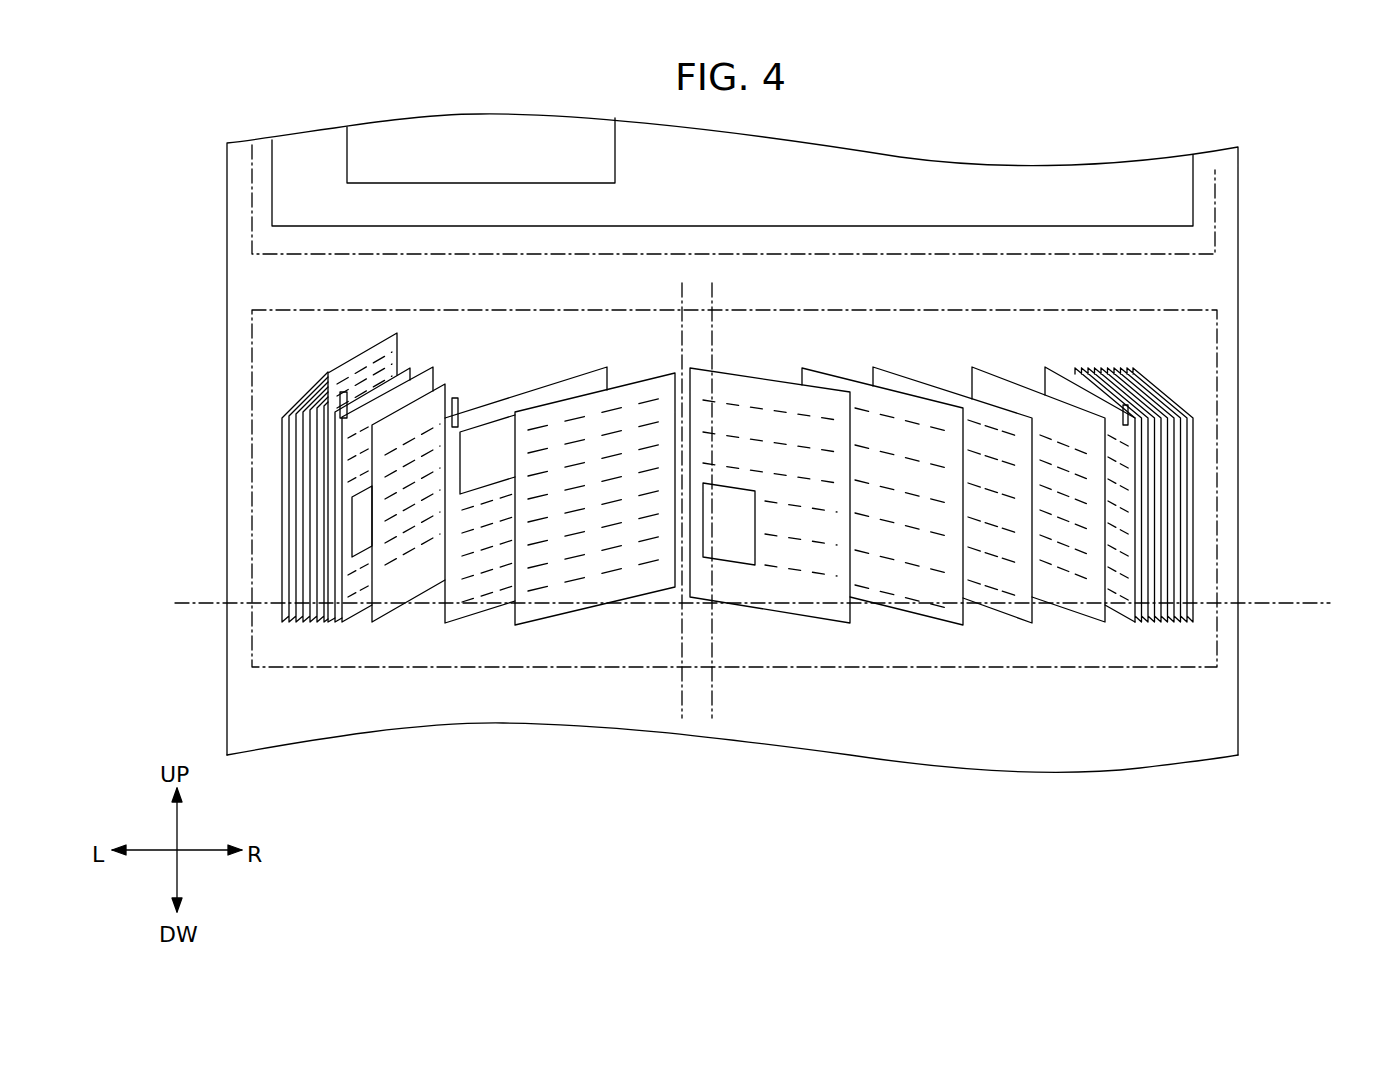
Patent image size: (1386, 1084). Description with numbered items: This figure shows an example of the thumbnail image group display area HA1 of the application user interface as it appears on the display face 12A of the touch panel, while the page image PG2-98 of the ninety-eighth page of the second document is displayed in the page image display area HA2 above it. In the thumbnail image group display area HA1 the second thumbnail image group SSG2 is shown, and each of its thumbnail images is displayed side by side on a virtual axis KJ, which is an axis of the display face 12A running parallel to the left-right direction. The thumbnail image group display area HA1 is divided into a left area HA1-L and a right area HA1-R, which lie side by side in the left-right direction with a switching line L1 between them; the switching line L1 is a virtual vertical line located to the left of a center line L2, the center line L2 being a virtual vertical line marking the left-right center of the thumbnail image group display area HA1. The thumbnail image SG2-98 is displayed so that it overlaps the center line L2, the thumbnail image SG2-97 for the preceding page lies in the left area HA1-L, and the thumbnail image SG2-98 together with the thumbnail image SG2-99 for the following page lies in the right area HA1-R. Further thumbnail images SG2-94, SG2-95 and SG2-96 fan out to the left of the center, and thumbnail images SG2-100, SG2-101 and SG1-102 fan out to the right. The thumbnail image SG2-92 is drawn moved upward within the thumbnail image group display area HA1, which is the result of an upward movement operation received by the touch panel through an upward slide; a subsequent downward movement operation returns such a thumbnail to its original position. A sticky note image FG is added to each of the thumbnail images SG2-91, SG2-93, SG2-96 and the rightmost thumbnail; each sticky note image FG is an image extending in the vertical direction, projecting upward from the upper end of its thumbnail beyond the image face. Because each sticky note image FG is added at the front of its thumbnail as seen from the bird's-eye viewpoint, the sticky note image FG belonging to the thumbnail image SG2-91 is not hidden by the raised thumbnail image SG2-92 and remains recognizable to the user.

The display face 12A is at (1228, 207).
The page image PG2-98 is at (272, 181).
The page image display area HA2 is at (1217, 170).
The thumbnail image group display area HA1 is at (1217, 441).
The left area HA1-L is at (304, 330).
The right area HA1-R is at (1171, 331).
The virtual axis KJ is at (1300, 601).
The switching line L1 is at (684, 693).
The center line L2 is at (712, 693).
The thumbnail image SG2-91 is at (328, 612).
The thumbnail image SG2-92 is at (395, 332).
The thumbnail image SG2-93 is at (407, 370).
The thumbnail image SG2-94 is at (352, 612).
The thumbnail image SG2-95 is at (388, 607).
The thumbnail image SG2-96 is at (478, 603).
The thumbnail image SG2-97 is at (587, 597).
The thumbnail image SG2-98 is at (738, 597).
The thumbnail image SG2-99 is at (875, 597).
The thumbnail image SG2-100 is at (987, 600).
The thumbnail image SG2-101 is at (975, 382).
The thumbnail image SG1-102 is at (1050, 383).
The second thumbnail image group SSG2 is at (1211, 497).
The sticky note image FG is at (300, 398).